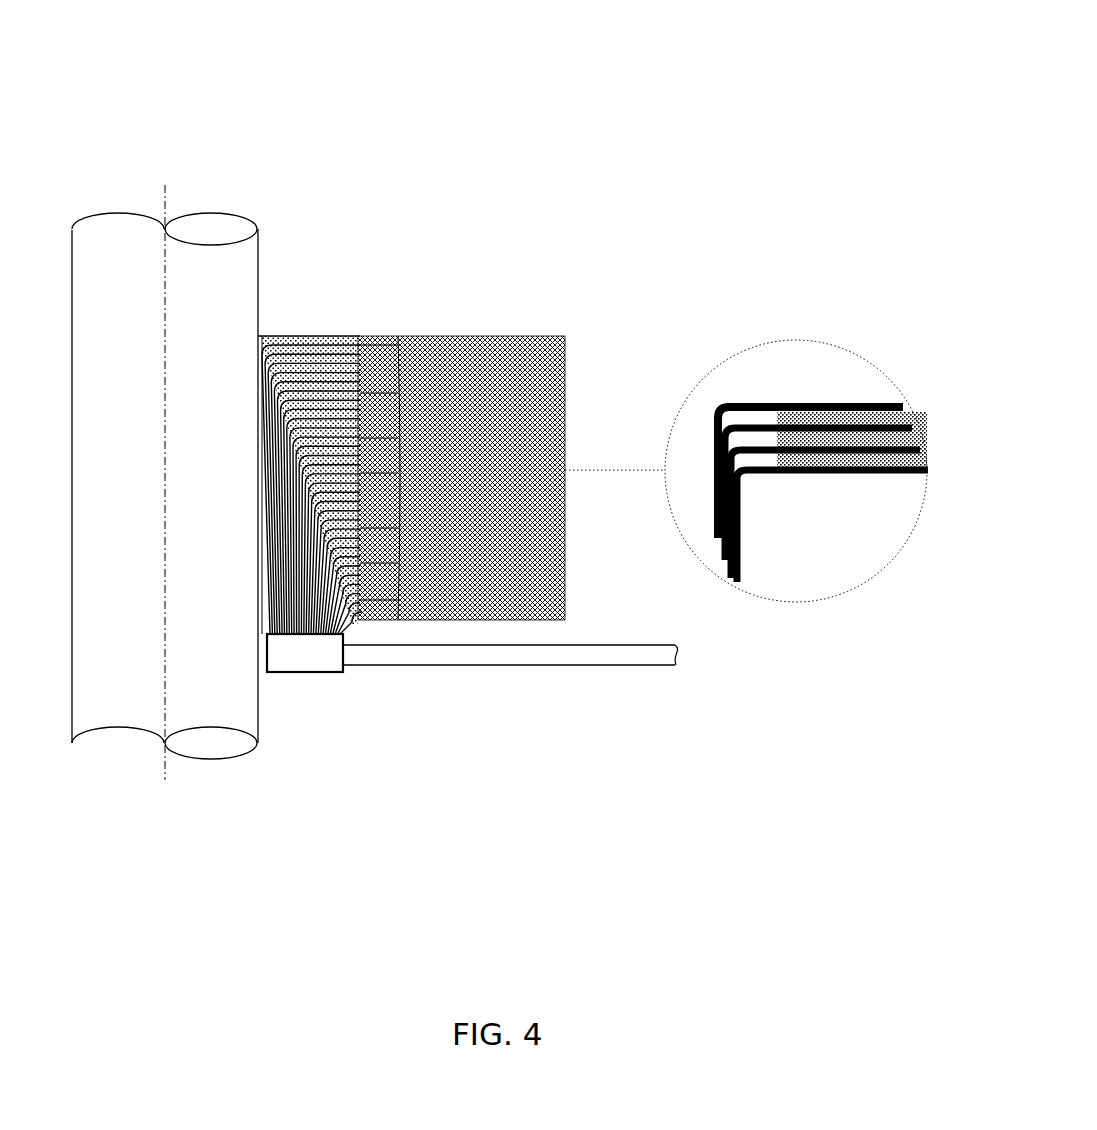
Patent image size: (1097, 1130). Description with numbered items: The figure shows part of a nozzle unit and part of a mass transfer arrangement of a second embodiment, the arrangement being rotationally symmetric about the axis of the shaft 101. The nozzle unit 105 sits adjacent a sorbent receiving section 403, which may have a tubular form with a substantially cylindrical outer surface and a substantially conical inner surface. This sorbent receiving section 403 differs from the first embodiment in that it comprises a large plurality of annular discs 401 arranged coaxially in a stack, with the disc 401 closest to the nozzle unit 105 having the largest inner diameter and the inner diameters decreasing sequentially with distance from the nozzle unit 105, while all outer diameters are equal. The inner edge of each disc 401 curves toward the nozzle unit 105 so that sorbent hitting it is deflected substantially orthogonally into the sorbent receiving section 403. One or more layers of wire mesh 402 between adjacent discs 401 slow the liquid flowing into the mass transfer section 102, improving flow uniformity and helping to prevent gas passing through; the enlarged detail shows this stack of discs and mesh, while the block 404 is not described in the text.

The shaft 101 is at (221, 312).
The mass transfer section 102 is at (443, 368).
The nozzle unit 105 is at (305, 660).
The annular disc 401 is at (748, 403).
The wire mesh 402 is at (802, 415).
The sorbent receiving section 403 is at (322, 372).
The coil winding block 404 is at (297, 333).